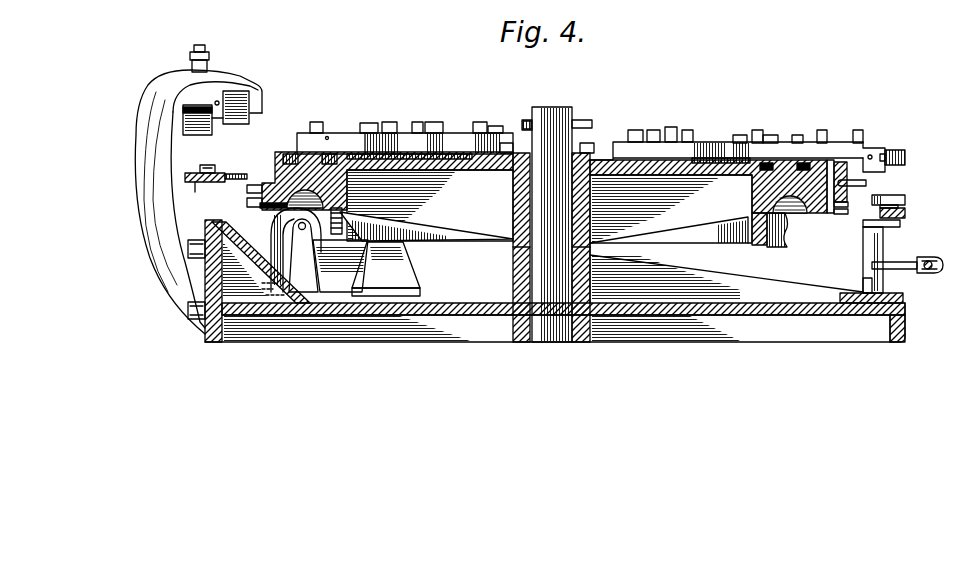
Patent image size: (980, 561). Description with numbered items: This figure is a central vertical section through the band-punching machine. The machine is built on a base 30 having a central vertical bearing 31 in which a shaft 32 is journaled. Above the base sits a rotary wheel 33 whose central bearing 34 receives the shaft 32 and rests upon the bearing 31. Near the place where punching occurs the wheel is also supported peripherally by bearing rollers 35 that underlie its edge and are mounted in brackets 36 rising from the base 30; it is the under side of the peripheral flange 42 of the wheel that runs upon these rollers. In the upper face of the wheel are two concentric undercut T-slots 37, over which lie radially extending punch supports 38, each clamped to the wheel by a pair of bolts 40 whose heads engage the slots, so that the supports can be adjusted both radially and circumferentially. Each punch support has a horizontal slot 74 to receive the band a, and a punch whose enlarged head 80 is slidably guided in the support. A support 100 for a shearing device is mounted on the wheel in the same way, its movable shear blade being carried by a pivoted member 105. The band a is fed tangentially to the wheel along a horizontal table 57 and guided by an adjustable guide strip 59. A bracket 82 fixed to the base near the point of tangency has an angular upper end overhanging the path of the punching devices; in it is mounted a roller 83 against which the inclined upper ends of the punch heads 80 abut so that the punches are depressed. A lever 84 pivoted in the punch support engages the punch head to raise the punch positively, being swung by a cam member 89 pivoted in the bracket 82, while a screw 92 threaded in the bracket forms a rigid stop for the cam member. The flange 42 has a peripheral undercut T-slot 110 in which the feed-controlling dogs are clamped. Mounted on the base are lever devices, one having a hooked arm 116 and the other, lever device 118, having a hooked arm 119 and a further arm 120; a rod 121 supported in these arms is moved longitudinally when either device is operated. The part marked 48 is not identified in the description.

The base 30 is at (766, 314).
The central vertical bearing 31 is at (592, 283).
The shaft 32 is at (548, 330).
The rotary wheel 33 is at (606, 154).
The central bearing 34 is at (513, 197).
The bearing rollers 35 is at (279, 247).
The brackets 36 is at (370, 258).
The circular undercut T-slots 37 is at (308, 152).
The punch supports 38 is at (442, 150).
The bolts 40 is at (436, 122).
The peripheral flange 42 is at (256, 198).
The inclined plate 48 is at (782, 238).
The horizontal table 57 is at (215, 185).
The adjustable guide strip 59 is at (197, 175).
The horizontal slot 74 is at (867, 182).
The enlarged head 80 is at (496, 128).
The bracket 82 is at (153, 214).
The roller 83 is at (240, 98).
The lever 84 is at (905, 159).
The cam member 89 is at (183, 110).
The screw 92 is at (204, 58).
The support 100 is at (348, 140).
The member 105 is at (313, 132).
The peripheral undercut T-slot 110 is at (857, 218).
The arm 116 is at (905, 213).
The lever device 118 is at (880, 260).
The arm 119 is at (905, 197).
The arm 120 is at (908, 270).
The rod 121 is at (946, 253).
The band a is at (236, 165).